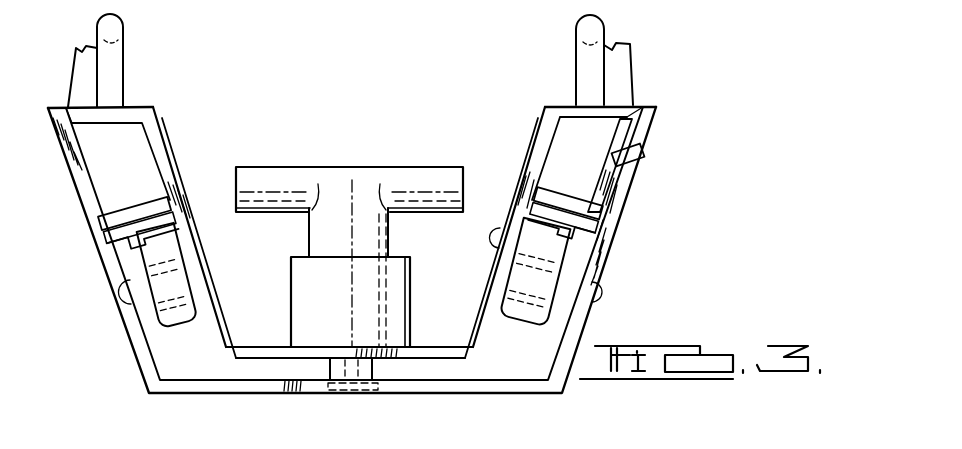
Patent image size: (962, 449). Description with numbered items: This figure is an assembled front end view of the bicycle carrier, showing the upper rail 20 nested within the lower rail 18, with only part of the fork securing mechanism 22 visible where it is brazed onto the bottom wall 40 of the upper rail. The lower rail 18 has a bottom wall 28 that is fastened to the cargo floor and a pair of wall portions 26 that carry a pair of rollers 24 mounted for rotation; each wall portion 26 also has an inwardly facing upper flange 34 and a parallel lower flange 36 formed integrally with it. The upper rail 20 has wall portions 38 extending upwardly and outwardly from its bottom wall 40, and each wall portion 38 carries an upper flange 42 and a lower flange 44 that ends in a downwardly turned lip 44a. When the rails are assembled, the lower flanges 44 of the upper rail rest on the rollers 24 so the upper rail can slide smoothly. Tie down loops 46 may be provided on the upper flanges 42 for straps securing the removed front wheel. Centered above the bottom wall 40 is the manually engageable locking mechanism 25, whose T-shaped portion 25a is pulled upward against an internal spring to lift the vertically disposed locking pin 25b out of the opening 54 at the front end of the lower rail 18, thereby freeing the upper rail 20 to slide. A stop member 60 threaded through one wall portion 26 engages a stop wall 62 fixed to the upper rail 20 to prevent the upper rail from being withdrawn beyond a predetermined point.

The lower rail 18 is at (72, 211).
The upper rail 20 is at (178, 125).
The fork securing mechanism 22 is at (66, 62).
The rollers 24 is at (173, 320).
The locking mechanism 25 is at (344, 258).
The T-shaped portion 25a is at (330, 182).
The locking pin 25b is at (337, 367).
The wall portions 26 is at (105, 245).
The bottom wall 28 is at (470, 383).
The upper flanges 34 is at (120, 200).
The lower flanges 36 is at (137, 307).
The wall portions 38 is at (173, 182).
The bottom wall 40 is at (417, 353).
The upper flange 42 is at (82, 113).
The lower flange 44 is at (113, 218).
The downwardly turned lip 44a is at (127, 250).
The tie down loops 46 is at (115, 55).
The opening 54 is at (370, 390).
The stop member 60 is at (652, 155).
The stop wall 62 is at (620, 125).